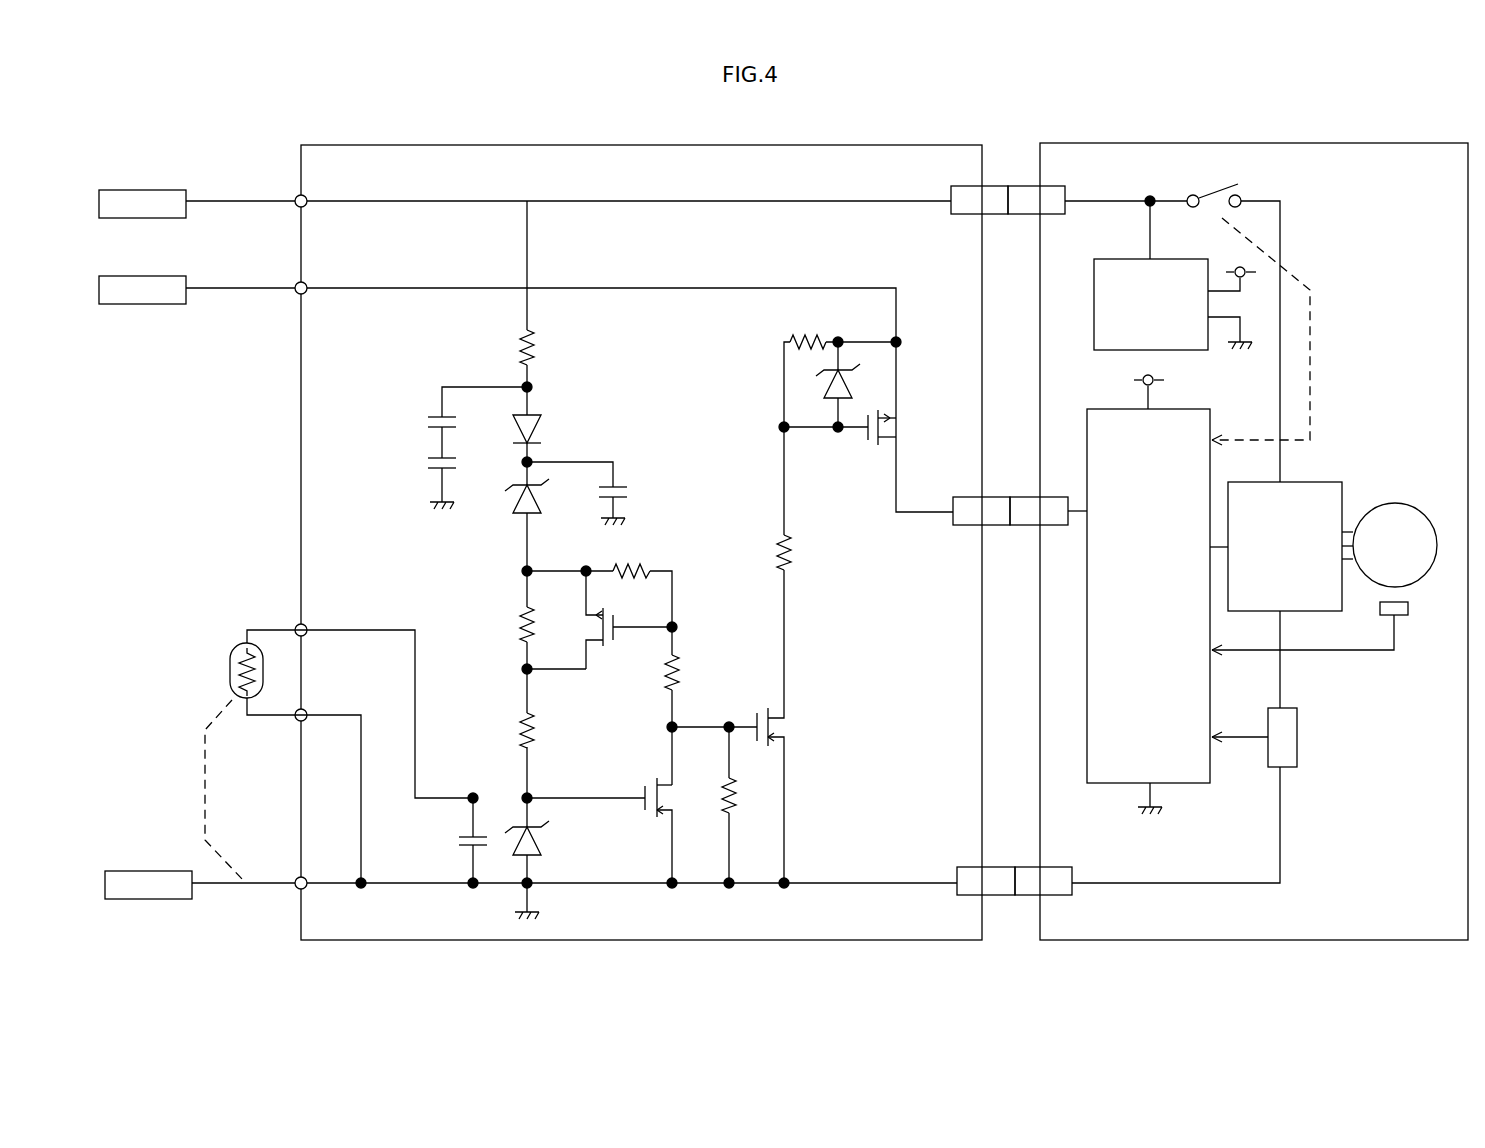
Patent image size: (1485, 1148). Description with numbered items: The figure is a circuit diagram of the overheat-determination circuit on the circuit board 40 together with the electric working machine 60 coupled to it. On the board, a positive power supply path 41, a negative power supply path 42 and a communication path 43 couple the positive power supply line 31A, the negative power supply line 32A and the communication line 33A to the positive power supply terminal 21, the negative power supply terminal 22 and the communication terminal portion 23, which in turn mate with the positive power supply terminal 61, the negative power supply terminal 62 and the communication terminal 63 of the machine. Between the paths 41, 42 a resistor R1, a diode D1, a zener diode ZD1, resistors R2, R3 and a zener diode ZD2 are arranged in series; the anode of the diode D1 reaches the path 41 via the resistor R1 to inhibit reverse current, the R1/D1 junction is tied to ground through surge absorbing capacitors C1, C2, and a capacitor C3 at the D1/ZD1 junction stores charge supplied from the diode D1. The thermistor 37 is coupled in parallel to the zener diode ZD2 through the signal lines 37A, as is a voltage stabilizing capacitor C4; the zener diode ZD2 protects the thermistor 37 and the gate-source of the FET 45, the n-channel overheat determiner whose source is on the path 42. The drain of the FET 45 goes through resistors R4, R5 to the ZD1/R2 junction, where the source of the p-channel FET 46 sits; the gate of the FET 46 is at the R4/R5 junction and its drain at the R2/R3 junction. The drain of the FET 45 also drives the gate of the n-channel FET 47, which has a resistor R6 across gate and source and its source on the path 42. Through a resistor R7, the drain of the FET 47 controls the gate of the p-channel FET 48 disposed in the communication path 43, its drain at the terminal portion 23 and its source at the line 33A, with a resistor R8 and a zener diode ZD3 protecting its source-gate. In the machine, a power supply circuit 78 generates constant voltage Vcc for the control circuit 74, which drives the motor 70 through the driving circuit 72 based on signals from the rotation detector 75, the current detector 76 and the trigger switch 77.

The circuit board 40 is at (410, 145).
The electric working machine 60 is at (1295, 143).
The positive power supply line 31A is at (228, 201).
The communication line 33A is at (228, 288).
The negative power supply line 32A is at (248, 884).
The thermistor 37 is at (232, 660).
The signal lines 37A is at (262, 630).
The positive power supply path 41 is at (716, 201).
The communication path 43 is at (716, 288).
The negative power supply path 42 is at (870, 883).
The positive power supply terminal 21 is at (962, 187).
The positive power supply terminal 61 is at (1045, 187).
The communication terminal portion 23 is at (962, 498).
The communication terminal 63 is at (1042, 497).
The negative power supply terminal 22 is at (968, 868).
The negative power supply terminal 62 is at (1055, 868).
The trigger switch 77 is at (1202, 195).
The power supply circuit 78 is at (1125, 259).
The control circuit 74 is at (1125, 415).
The driving circuit 72 is at (1303, 483).
The motor 70 is at (1402, 507).
The rotation detector 75 is at (1400, 615).
The current detector 76 is at (1296, 722).
The FET 45 is at (599, 819).
The FET 46 is at (629, 624).
The FET 47 is at (792, 726).
The FET 48 is at (858, 427).
The resistor R1 is at (546, 348).
The resistor R2 is at (510, 624).
The resistor R3 is at (510, 731).
The resistor R4 is at (690, 716).
The resistor R5 is at (642, 596).
The resistor R6 is at (748, 805).
The resistor R7 is at (803, 498).
The resistor R8 is at (840, 364).
The surge absorbing capacitor C1 is at (457, 422).
The surge absorbing capacitor C2 is at (422, 481).
The capacitor C3 is at (593, 493).
The voltage stabilizing capacitor C4 is at (457, 840).
The diode D1 is at (546, 433).
The zener diode ZD1 is at (549, 497).
The zener diode ZD2 is at (552, 838).
The zener diode ZD3 is at (858, 390).